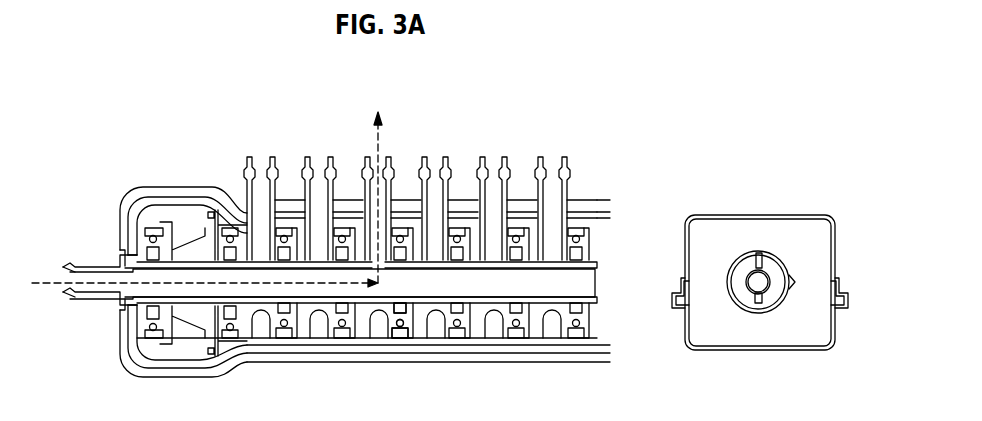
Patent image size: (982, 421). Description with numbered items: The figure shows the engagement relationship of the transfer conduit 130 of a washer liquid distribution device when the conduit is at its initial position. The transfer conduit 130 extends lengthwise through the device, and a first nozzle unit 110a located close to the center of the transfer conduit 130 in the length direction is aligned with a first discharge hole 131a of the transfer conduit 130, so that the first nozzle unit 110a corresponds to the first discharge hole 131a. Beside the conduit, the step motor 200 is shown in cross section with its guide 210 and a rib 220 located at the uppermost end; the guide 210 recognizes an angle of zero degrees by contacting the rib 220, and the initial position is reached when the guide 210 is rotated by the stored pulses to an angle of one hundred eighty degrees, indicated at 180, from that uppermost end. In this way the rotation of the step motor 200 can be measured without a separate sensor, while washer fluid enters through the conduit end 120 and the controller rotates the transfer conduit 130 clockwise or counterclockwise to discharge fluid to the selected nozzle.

The first nozzle unit 110a is at (388, 168).
The inlet pipe 120 is at (73, 268).
The transfer conduit 130 is at (195, 297).
The first discharge hole 131a is at (381, 265).
The mounting bracket 180 is at (892, 287).
The step motor 200 is at (772, 191).
The guide 210 is at (758, 300).
The rib 220 is at (740, 257).